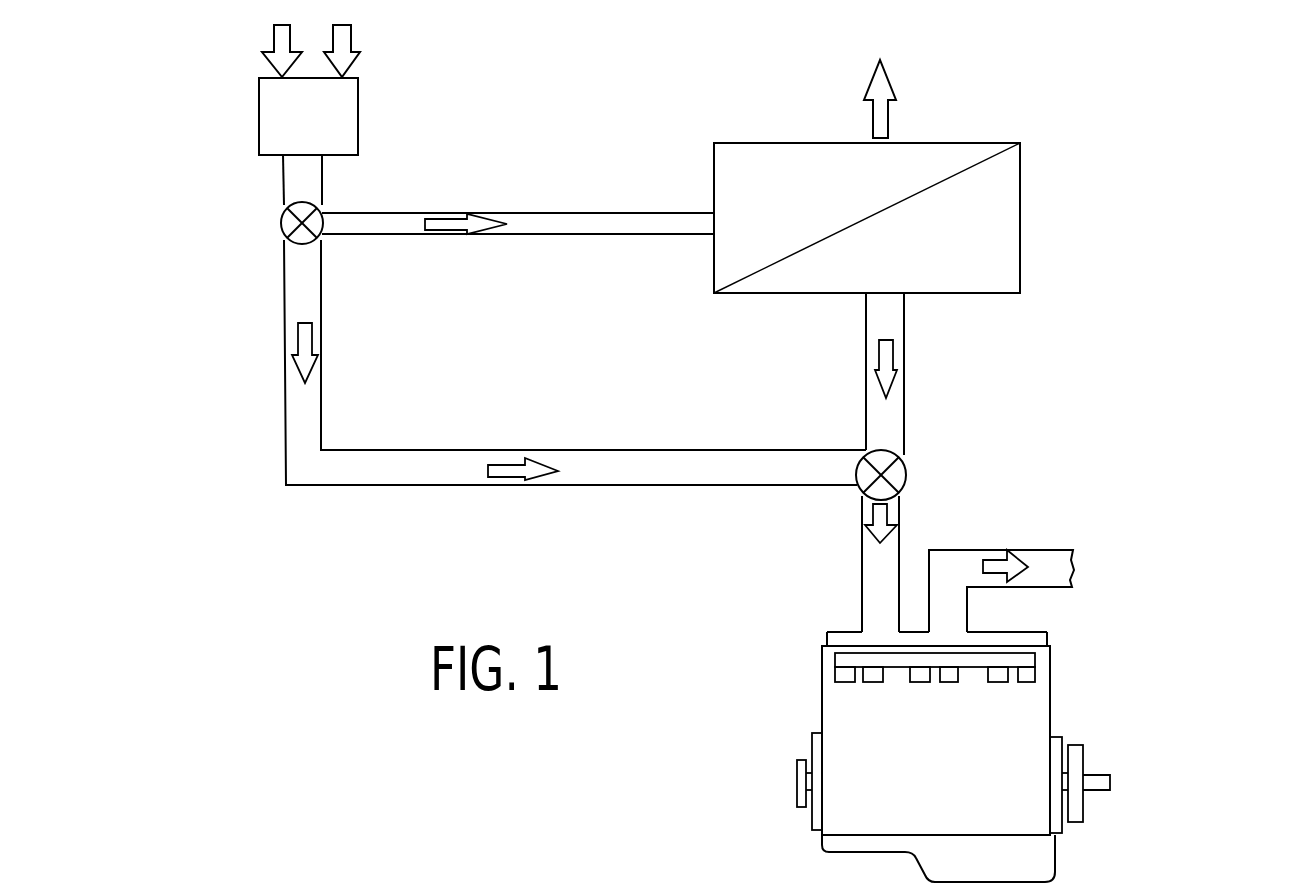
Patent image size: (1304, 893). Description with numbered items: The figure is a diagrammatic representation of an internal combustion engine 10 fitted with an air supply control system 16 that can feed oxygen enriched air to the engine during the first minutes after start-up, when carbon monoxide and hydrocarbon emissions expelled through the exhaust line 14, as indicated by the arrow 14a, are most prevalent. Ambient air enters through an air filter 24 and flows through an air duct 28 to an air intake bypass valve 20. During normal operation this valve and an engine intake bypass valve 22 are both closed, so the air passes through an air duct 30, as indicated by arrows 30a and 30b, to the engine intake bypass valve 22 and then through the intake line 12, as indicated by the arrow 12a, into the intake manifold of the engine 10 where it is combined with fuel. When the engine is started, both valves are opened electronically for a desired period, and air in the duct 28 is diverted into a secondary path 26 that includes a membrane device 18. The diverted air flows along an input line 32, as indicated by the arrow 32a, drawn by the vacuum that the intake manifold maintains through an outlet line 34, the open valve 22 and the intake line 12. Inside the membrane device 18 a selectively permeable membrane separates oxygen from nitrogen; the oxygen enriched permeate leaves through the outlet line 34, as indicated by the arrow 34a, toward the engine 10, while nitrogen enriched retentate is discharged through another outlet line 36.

The internal combustion engine 10 is at (840, 866).
The intake line 12 is at (862, 567).
The arrow 12a is at (872, 515).
The exhaust line 14 is at (1050, 590).
The arrow 14a is at (1000, 556).
The air supply control system 16 is at (580, 126).
The membrane device 18 is at (743, 143).
The air intake bypass valve 20 is at (292, 210).
The engine intake bypass valve 22 is at (903, 462).
The air filter 24 is at (358, 100).
The secondary path 26 is at (672, 292).
The air duct 28 is at (322, 178).
The air duct 30 is at (286, 412).
The arrow 30a is at (312, 330).
The arrow 30b is at (510, 465).
The input line 32 is at (532, 212).
The arrow 32a is at (455, 217).
The outlet line 34 is at (905, 320).
The arrow 34a is at (893, 355).
The outlet line 36 is at (888, 113).